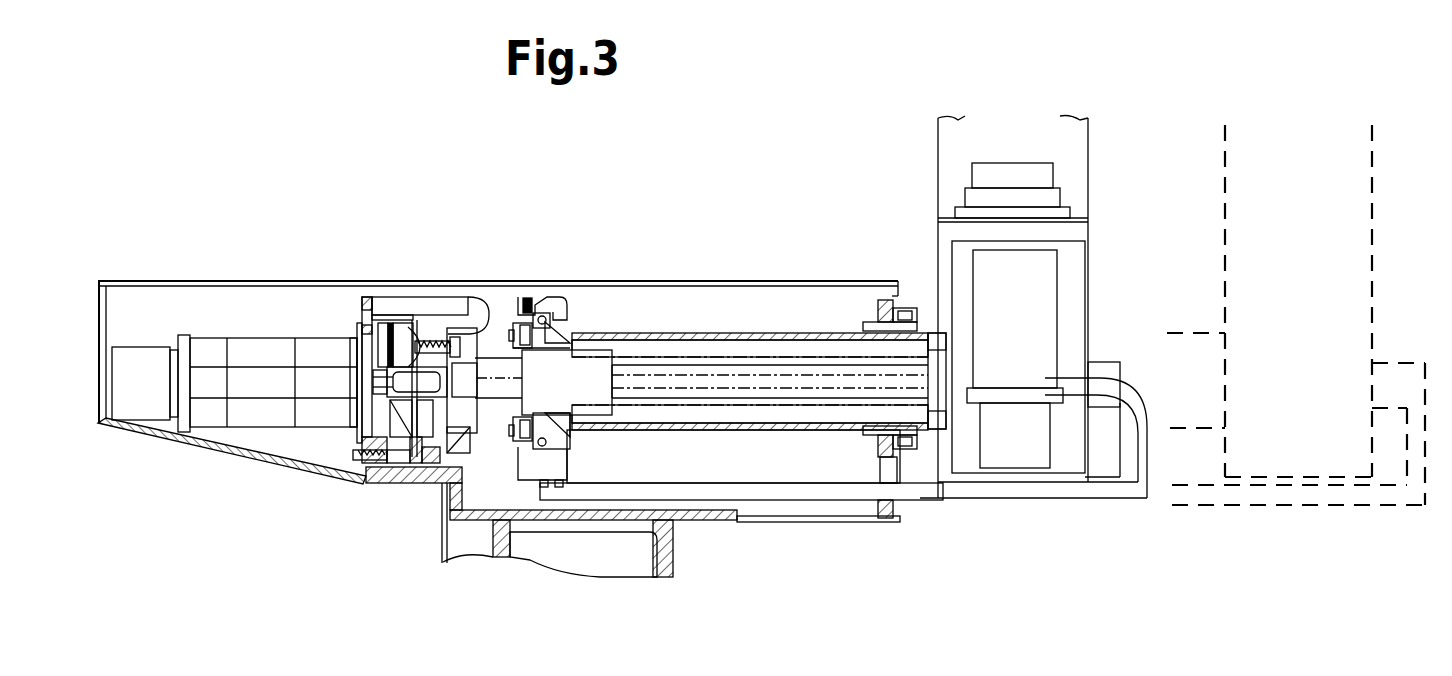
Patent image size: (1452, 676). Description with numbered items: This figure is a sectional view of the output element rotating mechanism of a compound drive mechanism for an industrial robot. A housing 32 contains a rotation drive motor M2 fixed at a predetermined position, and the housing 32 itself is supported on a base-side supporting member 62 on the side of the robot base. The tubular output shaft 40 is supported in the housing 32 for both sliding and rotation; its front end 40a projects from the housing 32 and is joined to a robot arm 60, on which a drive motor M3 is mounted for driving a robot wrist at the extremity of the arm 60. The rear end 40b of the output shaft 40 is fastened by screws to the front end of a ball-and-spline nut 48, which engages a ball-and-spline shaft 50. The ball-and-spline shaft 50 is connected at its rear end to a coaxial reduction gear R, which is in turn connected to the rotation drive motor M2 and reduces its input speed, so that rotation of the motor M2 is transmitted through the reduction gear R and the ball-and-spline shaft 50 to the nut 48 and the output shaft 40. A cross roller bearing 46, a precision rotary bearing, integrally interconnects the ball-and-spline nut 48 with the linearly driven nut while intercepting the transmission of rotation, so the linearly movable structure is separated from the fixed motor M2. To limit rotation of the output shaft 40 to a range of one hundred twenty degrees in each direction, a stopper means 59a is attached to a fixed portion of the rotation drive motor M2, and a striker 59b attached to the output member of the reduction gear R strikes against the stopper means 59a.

The housing 32 is at (300, 281).
The rotation drive motor M2 is at (255, 413).
The stopper means 59a is at (452, 303).
The reduction gear R is at (458, 303).
The striker 59b is at (452, 441).
The cross roller bearing 46 is at (547, 300).
The ball-and-spline nut 48 is at (604, 349).
The output shaft 40 is at (700, 330).
The rear end of the output shaft 40b is at (577, 333).
The ball-and-spline shaft 50 is at (763, 380).
The front end of the output shaft 40a is at (933, 403).
The robot arm 60 is at (1088, 278).
The drive motor M3 is at (1033, 455).
The base-side supporting member 62 is at (665, 553).